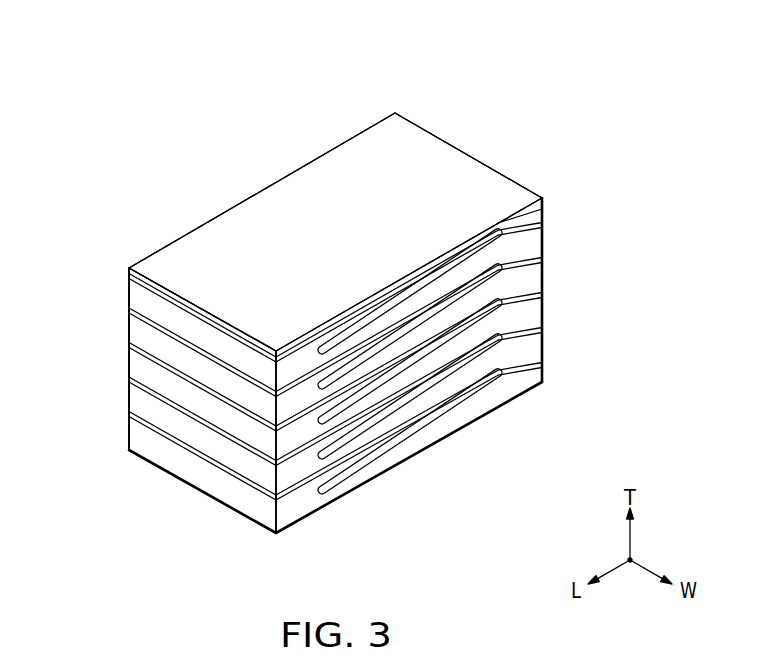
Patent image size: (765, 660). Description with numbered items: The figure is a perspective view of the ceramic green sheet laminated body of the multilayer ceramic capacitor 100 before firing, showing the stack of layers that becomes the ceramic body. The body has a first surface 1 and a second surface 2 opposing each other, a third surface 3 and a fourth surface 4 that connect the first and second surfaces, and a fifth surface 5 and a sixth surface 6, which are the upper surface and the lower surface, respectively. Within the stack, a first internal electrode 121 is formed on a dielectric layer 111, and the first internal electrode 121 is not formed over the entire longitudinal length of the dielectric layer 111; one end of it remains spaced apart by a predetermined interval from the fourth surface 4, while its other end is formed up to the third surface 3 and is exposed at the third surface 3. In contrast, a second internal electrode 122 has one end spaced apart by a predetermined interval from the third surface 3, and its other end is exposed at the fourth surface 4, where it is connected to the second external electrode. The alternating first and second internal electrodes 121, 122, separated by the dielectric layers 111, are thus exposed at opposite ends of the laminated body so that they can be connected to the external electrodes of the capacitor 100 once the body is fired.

The multilayer ceramic capacitor 100 is at (194, 58).
The first surface 1 is at (208, 238).
The second surface 2 is at (523, 357).
The third surface 3 is at (190, 436).
The fourth surface 4 is at (456, 159).
The fifth surface 5 is at (355, 167).
The sixth surface 6 is at (450, 442).
The dielectric layer 111 is at (153, 373).
The first internal electrode 121 is at (147, 322).
The second internal electrode 122 is at (520, 312).